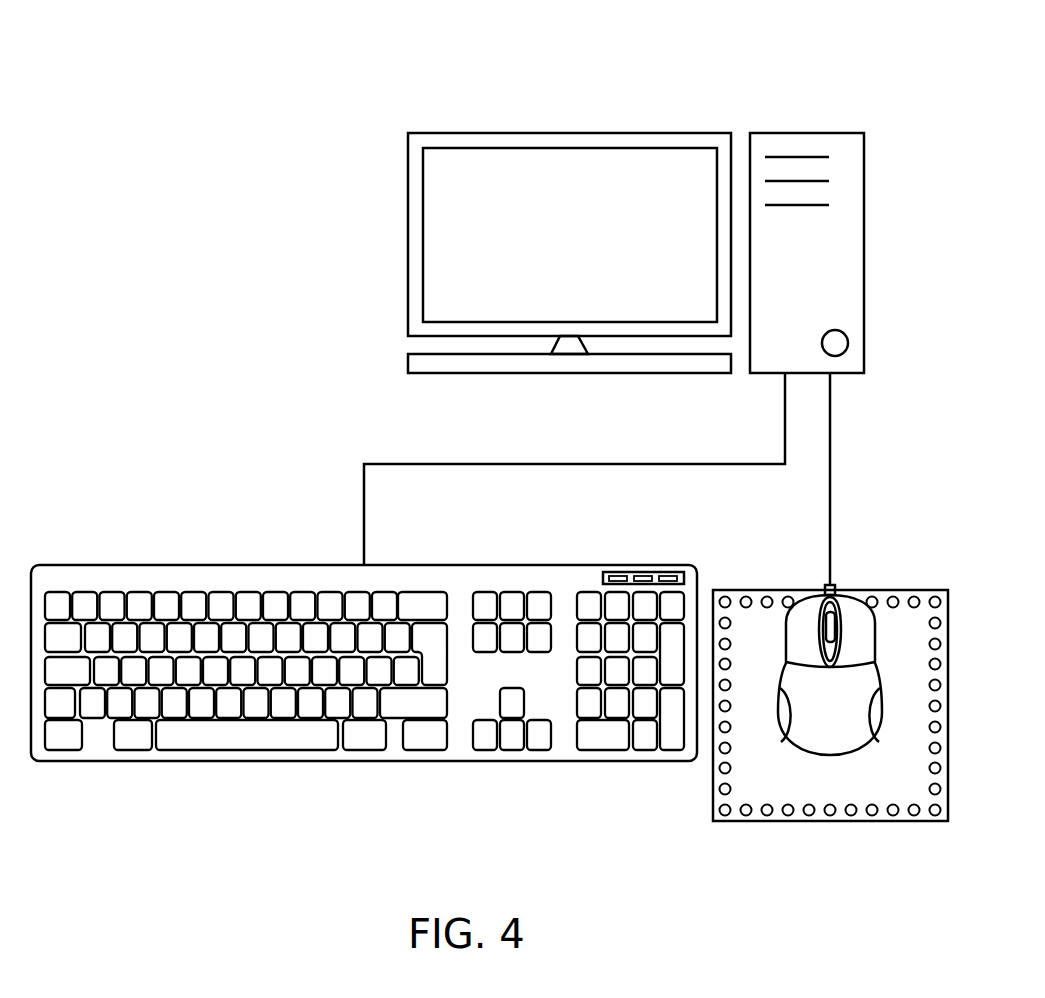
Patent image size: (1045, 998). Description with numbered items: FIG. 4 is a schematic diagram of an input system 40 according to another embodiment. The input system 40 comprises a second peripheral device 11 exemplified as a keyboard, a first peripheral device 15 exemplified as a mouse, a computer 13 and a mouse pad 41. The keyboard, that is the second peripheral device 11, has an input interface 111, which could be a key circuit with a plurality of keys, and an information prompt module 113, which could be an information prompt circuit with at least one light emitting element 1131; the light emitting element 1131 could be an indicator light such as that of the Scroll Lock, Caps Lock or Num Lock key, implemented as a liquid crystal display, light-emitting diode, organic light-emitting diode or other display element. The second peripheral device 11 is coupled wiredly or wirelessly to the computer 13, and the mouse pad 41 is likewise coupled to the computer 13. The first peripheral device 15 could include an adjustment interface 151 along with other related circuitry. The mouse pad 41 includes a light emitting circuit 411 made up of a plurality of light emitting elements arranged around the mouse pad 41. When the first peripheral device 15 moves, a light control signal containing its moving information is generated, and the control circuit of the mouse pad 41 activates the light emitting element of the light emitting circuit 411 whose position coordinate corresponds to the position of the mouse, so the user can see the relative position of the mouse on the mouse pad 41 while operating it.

The input system 40 is at (90, 64).
The second peripheral device 11 is at (168, 572).
The input interface 111 is at (255, 740).
The information prompt module 113 is at (686, 576).
The light emitting element 1131 is at (703, 505).
The computer 13 is at (812, 140).
The first peripheral device 15 is at (860, 617).
The adjustment interface 151 is at (781, 718).
The mouse pad 41 is at (797, 821).
The light emitting circuit 411 is at (892, 810).